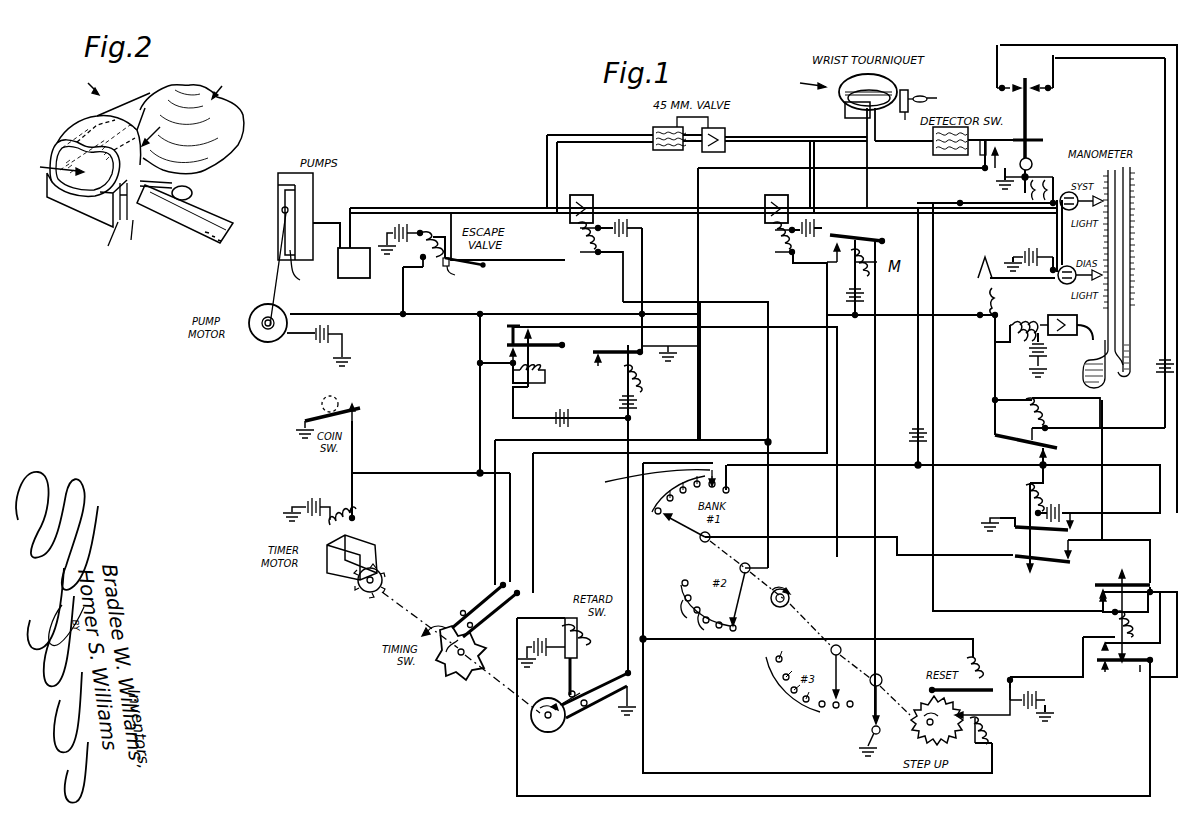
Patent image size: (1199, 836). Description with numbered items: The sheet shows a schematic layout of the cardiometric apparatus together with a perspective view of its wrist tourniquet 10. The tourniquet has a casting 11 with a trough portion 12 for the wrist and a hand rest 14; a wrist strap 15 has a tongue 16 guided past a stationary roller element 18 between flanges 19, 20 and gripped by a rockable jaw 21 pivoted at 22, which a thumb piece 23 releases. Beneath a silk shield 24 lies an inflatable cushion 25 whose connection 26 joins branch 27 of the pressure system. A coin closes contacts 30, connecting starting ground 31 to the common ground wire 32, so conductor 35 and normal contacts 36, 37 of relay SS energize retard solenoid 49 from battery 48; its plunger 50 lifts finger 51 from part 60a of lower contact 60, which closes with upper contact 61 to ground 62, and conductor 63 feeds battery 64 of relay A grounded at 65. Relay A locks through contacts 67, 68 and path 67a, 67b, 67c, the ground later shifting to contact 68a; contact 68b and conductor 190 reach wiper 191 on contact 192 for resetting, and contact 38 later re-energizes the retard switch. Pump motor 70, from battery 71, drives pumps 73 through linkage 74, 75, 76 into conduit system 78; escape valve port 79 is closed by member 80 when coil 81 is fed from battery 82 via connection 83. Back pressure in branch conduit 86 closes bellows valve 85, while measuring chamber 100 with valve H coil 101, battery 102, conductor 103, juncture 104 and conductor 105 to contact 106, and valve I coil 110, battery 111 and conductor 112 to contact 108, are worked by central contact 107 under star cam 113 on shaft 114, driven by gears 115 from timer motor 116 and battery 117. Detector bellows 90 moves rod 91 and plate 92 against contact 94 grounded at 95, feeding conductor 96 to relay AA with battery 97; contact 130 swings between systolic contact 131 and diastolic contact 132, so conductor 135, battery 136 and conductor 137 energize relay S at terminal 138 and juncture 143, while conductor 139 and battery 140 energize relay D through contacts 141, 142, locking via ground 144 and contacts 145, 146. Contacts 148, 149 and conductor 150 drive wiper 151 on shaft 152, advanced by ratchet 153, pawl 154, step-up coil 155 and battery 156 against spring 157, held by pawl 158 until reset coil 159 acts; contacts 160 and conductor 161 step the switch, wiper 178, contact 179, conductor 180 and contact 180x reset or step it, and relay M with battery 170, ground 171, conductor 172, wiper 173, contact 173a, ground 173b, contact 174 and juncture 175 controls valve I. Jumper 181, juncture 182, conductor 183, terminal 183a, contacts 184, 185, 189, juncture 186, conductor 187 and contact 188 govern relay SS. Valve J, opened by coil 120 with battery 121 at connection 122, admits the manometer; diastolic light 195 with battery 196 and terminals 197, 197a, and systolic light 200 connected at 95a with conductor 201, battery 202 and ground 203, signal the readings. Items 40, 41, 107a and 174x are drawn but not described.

In FIG. 2, the wrist tourniquet 10 is at (82, 85).
In FIG. 1, the wrist tourniquet 10 is at (804, 83).
In FIG. 2, the casting 11 is at (140, 127).
In FIG. 1, the casting 11 is at (844, 114).
In FIG. 2, the trough portion 12 is at (160, 131).
In FIG. 2, the hand rest 14 is at (192, 122).
In FIG. 2, the wrist strap 15 is at (90, 130).
In FIG. 1, the wrist strap 15 is at (859, 86).
In FIG. 2, the tongue 16 is at (197, 218).
In FIG. 1, the tongue 16 is at (944, 94).
In FIG. 2, the stationary roller element 18 is at (140, 207).
In FIG. 2, the flange 19 is at (110, 225).
In FIG. 2, the flange 20 is at (173, 184).
In FIG. 2, the rockable jaw 21 is at (135, 237).
In FIG. 1, the rockable jaw 21 is at (910, 120).
In FIG. 2, the pivot 22 is at (112, 242).
In FIG. 1, the pivot 22 is at (903, 92).
In FIG. 2, the thumb piece 23 is at (192, 195).
In FIG. 1, the thumb piece 23 is at (284, 173).
In FIG. 2, the shield of silk 24 is at (64, 163).
In FIG. 1, the shield of silk 24 is at (850, 94).
In FIG. 1, the inflatable cushion 25 is at (866, 114).
In FIG. 1, the conduit connection 26 is at (867, 160).
In FIG. 1, the branch 27 is at (898, 203).
In FIG. 1, the coin switch contacts 30 is at (362, 408).
In FIG. 1, the starting ground 31 is at (302, 420).
In FIG. 1, the common ground wire 32 is at (384, 312).
In FIG. 1, the conductor 35 is at (517, 764).
In FIG. 1, the normal contact of relay SS 36 is at (1104, 676).
In FIG. 1, the contact of relay SS 37 is at (1139, 676).
In FIG. 1, the contact of relay SS 38 is at (1102, 647).
In FIG. 1, the cam wheel 40 is at (552, 700).
In FIG. 1, the link 41 is at (578, 694).
In FIG. 1, the battery 48 is at (540, 642).
In FIG. 1, the retard switch solenoid 49 is at (577, 634).
In FIG. 1, the plunger 50 is at (570, 618).
In FIG. 1, the finger 51 is at (575, 680).
In FIG. 1, the lower contact 60 is at (602, 710).
In FIG. 1, the extended part 60a is at (584, 724).
In FIG. 1, the upper contact 61 is at (596, 683).
In FIG. 1, the ground 62 is at (626, 724).
In FIG. 1, the conductor 63 is at (626, 543).
In FIG. 1, the battery 64 is at (560, 416).
In FIG. 1, the ground juncture 65 is at (489, 304).
In FIG. 1, the contact on relay A 67 is at (562, 345).
In FIG. 1, the contact on relay AA 67a is at (594, 350).
In FIG. 1, the movable contact on relay AA 67b is at (672, 300).
In FIG. 1, the holding ground 67c is at (682, 348).
In FIG. 1, the contact on relay A 68 is at (505, 353).
In FIG. 1, the contact 68a is at (599, 364).
In FIG. 1, the normal contact 68b is at (508, 341).
In FIG. 1, the pump motor 70 is at (271, 346).
In FIG. 1, the battery 71 is at (336, 333).
In FIG. 1, the pumps 73 is at (302, 274).
In FIG. 1, the linkage 74 is at (282, 213).
In FIG. 1, the linkage 75 is at (278, 283).
In FIG. 1, the linkage 76 is at (268, 317).
In FIG. 1, the pressure conduit system 78 is at (519, 208).
In FIG. 1, the escape valve port 79 is at (476, 266).
In FIG. 1, the escape valve closing member 80 is at (457, 275).
In FIG. 1, the operating coil 81 is at (419, 258).
In FIG. 1, the battery 82 is at (410, 226).
In FIG. 1, the connection 83 is at (406, 313).
In FIG. 1, the bellows valve 85 is at (691, 154).
In FIG. 1, the branch conduit 86 is at (781, 140).
In FIG. 1, the detector switch bellows 90 is at (933, 152).
In FIG. 1, the bellows rod 91 is at (1026, 140).
In FIG. 1, the plate 92 is at (984, 142).
In FIG. 1, the companion contact 94 is at (1000, 165).
In FIG. 1, the ground 95 is at (1000, 189).
In FIG. 1, the terminal 95a is at (1025, 177).
In FIG. 1, the conductor 96 is at (698, 262).
In FIG. 1, the battery 97 is at (635, 400).
In FIG. 1, the measuring chamber conduit 100 is at (677, 208).
In FIG. 1, the coil of valve H 101 is at (572, 248).
In FIG. 1, the battery 102 is at (644, 226).
In FIG. 1, the conductor 103 is at (694, 287).
In FIG. 1, the juncture 104 is at (766, 440).
In FIG. 1, the conductor 105 is at (655, 439).
In FIG. 1, the timing switch contact 106 is at (460, 613).
In FIG. 1, the central timer switch contact 107 is at (484, 622).
In FIG. 1, the junction 107a is at (480, 475).
In FIG. 1, the timing switch contact 108 is at (506, 612).
In FIG. 1, the operating coil of valve I 110 is at (774, 252).
In FIG. 1, the battery 111 is at (822, 227).
In FIG. 1, the conductor 112 is at (827, 292).
In FIG. 1, the star cam 113 is at (449, 677).
In FIG. 1, the shaft 114 is at (402, 608).
In FIG. 1, the clock work gears 115 is at (382, 576).
In FIG. 1, the timer motor 116 is at (360, 527).
In FIG. 1, the battery 117 is at (308, 506).
In FIG. 1, the operating coil of valve J 120 is at (1014, 322).
In FIG. 1, the battery 121 is at (1041, 366).
In FIG. 1, the connection 122 is at (995, 352).
In FIG. 1, the detector switch contact 130 is at (1033, 74).
In FIG. 1, the systolic contact 131 is at (1038, 92).
In FIG. 1, the diastolic contact 132 is at (1016, 90).
In FIG. 1, the conductor 135 is at (1160, 95).
In FIG. 1, the battery 136 is at (1162, 375).
In FIG. 1, the conductor 137 is at (1143, 422).
In FIG. 1, the terminal of relay S 138 is at (1033, 400).
In FIG. 1, the conductor 139 is at (1134, 58).
In FIG. 1, the battery 140 is at (1064, 515).
In FIG. 1, the normal contact of relay S 141 is at (1042, 462).
In FIG. 1, the contact of relay S 142 is at (999, 442).
In FIG. 1, the juncture 143 is at (995, 409).
In FIG. 1, the ground 144 is at (987, 522).
In FIG. 1, the contact of relay D 145 is at (1022, 526).
In FIG. 1, the contact of relay D 146 is at (1074, 531).
In FIG. 1, the contact of relay D 148 is at (1073, 560).
In FIG. 1, the contact of relay D 149 is at (1046, 570).
In FIG. 1, the conductor 150 is at (819, 536).
In FIG. 1, the wiper 151 is at (683, 532).
In FIG. 1, the shaft 152 is at (750, 562).
In FIG. 1, the ratchet 153 is at (894, 744).
In FIG. 1, the pawl 154 is at (978, 705).
In FIG. 1, the step-up coil 155 is at (978, 741).
In FIG. 1, the battery 156 is at (1028, 713).
In FIG. 1, the return spring 157 is at (788, 593).
In FIG. 1, the holding pawl 158 is at (924, 684).
In FIG. 1, the reset coil 159 is at (978, 668).
In FIG. 1, the looped contacts 160 is at (656, 484).
In FIG. 1, the conductor 161 is at (644, 582).
In FIG. 1, the battery 170 is at (857, 294).
In FIG. 1, the ground connection 171 is at (855, 318).
In FIG. 1, the conductor 172 is at (875, 412).
In FIG. 1, the special wiper 173 is at (876, 710).
In FIG. 1, the first-position contact 173a is at (872, 732).
In FIG. 1, the ground 173b is at (860, 752).
In FIG. 1, the contact on relay M 174 is at (830, 256).
In FIG. 1, the contact 174x is at (869, 231).
In FIG. 1, the juncture 175 is at (827, 317).
In FIG. 1, the wiper 178 is at (738, 610).
In FIG. 1, the contact 179 is at (706, 642).
In FIG. 1, the conductor 180 is at (924, 630).
In FIG. 1, the third contact 180x is at (690, 630).
In FIG. 1, the jumper 181 is at (936, 255).
In FIG. 1, the juncture 182 is at (935, 280).
In FIG. 1, the conductor 183 is at (935, 432).
In FIG. 1, the terminal of relay SS 183a is at (1114, 616).
In FIG. 1, the contact of relay SS 184 is at (1100, 605).
In FIG. 1, the normal contact of relay SS 185 is at (1132, 582).
In FIG. 1, the juncture 186 is at (1162, 591).
In FIG. 1, the conductor 187 is at (860, 474).
In FIG. 1, the sixth contact 188 is at (754, 496).
In FIG. 1, the make contact of relay SS 189 is at (1114, 584).
In FIG. 1, the conductor 190 is at (560, 310).
In FIG. 1, the wiper 191 is at (837, 672).
In FIG. 1, the last contact 192 is at (776, 661).
In FIG. 1, the diastolic light 195 is at (1062, 286).
In FIG. 1, the battery 196 is at (1042, 257).
In FIG. 1, the terminals 197 is at (982, 259).
In FIG. 1, the terminal 197a is at (994, 324).
In FIG. 1, the systolic signal light 200 is at (1071, 190).
In FIG. 1, the conductor 201 is at (1014, 212).
In FIG. 1, the battery 202 is at (913, 439).
In FIG. 1, the ground connection 203 is at (918, 470).
In FIG. 1, the cutout relay AA is at (639, 378).
In FIG. 1, the manometer valve J is at (1063, 314).
In FIG. 1, the systolic testing relay SS is at (1131, 624).